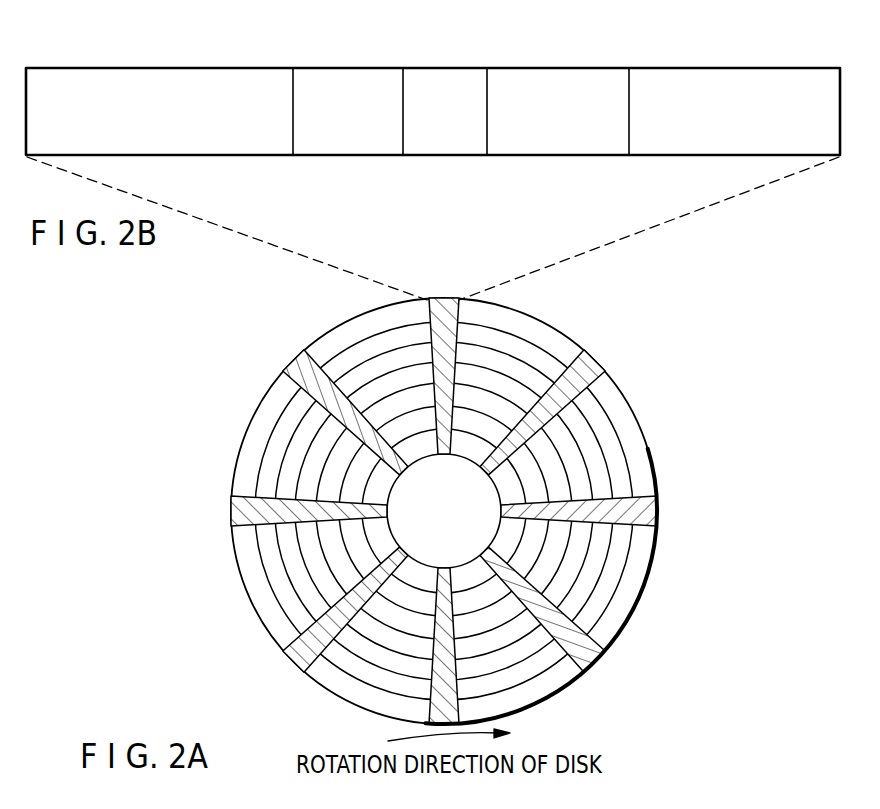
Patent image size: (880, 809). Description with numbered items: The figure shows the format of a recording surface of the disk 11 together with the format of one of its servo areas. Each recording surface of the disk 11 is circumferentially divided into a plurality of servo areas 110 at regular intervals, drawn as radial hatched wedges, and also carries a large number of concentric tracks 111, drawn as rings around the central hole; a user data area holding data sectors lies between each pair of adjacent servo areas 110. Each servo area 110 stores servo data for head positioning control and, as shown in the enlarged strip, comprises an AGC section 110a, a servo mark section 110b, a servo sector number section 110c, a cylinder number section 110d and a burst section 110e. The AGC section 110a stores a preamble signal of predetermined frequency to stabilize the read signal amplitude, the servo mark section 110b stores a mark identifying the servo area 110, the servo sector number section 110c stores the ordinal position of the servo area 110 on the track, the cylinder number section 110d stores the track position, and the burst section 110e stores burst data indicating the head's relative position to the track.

In FIG. 2A, the disk 11 is at (477, 483).
In FIG. 2A, the servo area 110 is at (445, 298).
In FIG. 2A, the concentric tracks 111 is at (605, 592).
In FIG. 2B, the AGC section 110a is at (151, 67).
In FIG. 2B, the servo mark section 110b is at (355, 67).
In FIG. 2B, the servo sector number section 110c is at (452, 67).
In FIG. 2B, the cylinder number section 110d is at (560, 67).
In FIG. 2B, the burst section 110e is at (702, 67).